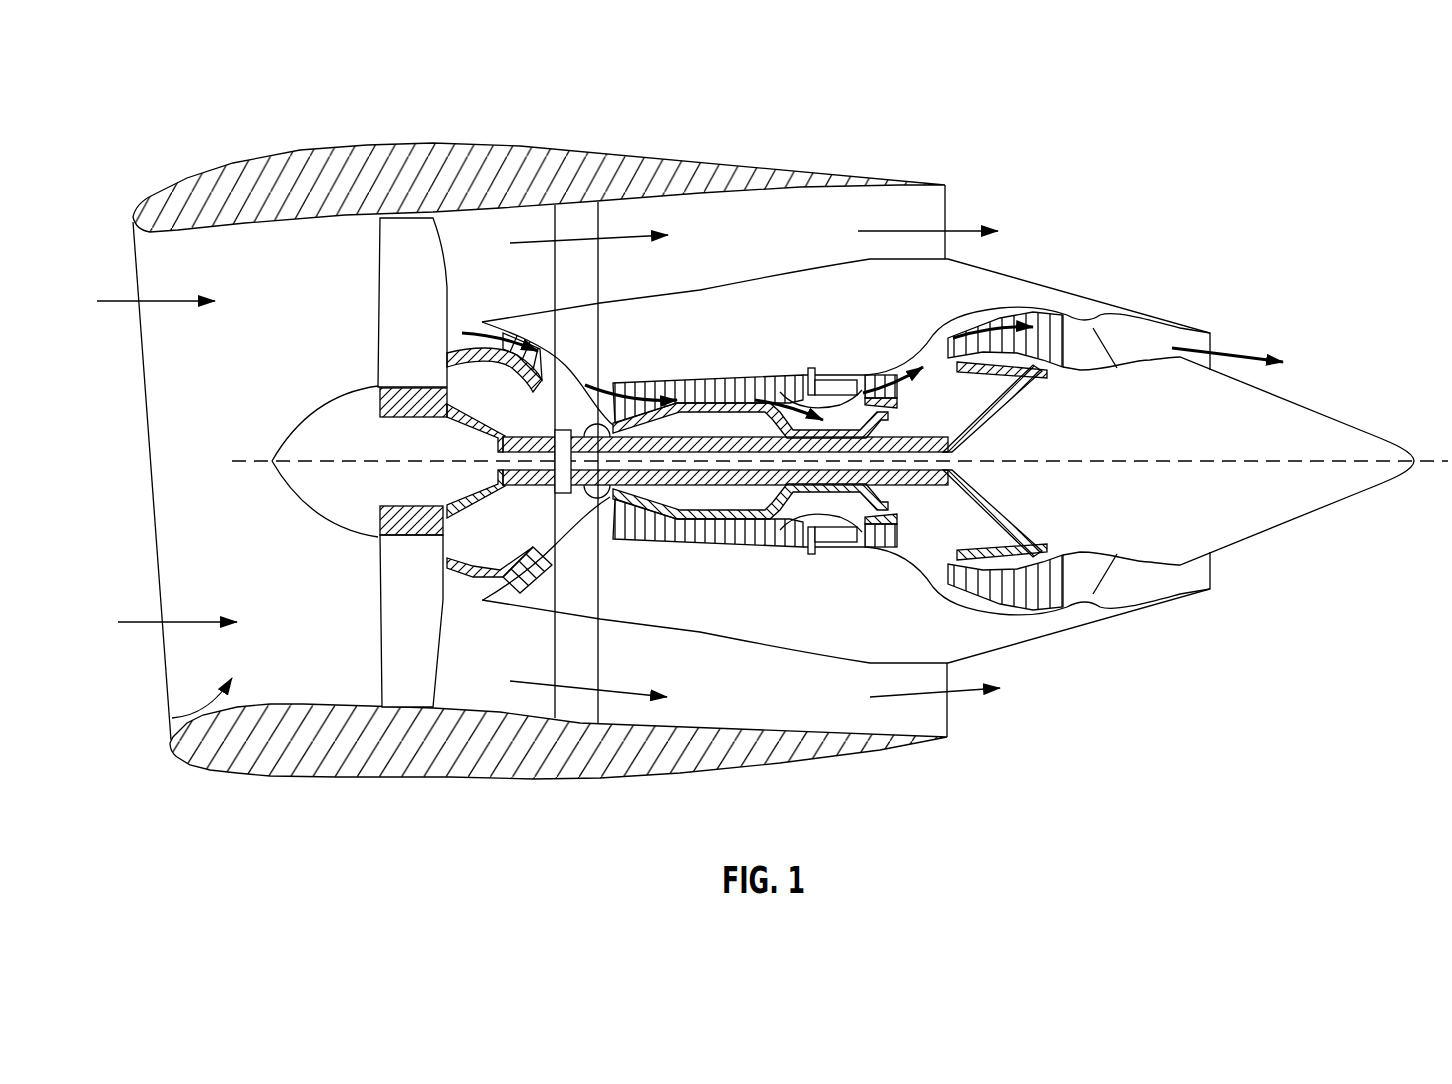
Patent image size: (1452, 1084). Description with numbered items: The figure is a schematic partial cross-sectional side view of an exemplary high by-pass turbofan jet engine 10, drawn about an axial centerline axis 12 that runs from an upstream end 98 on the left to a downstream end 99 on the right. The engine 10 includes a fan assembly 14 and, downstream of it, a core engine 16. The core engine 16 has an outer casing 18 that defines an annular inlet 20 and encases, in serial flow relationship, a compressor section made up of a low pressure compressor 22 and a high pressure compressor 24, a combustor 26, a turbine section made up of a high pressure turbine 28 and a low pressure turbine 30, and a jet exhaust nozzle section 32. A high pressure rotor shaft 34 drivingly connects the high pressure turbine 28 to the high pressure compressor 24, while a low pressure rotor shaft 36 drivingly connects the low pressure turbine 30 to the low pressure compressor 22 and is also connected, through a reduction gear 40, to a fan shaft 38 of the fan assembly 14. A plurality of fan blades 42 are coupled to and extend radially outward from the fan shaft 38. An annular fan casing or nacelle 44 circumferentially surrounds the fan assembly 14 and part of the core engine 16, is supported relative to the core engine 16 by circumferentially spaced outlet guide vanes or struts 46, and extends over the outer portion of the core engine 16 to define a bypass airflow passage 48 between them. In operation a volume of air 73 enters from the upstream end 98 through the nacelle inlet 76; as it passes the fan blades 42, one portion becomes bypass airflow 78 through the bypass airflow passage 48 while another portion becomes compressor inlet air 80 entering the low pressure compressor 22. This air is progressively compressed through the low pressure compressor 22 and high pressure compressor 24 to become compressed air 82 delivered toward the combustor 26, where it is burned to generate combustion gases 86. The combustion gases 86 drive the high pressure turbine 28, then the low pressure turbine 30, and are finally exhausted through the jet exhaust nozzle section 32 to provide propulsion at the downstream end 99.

The high by-pass turbofan jet engine 10 is at (772, 440).
The axial centerline axis 12 is at (1168, 455).
The fan assembly 14 is at (472, 250).
The core engine 16 is at (808, 265).
The outer casing 18 is at (777, 652).
The annular inlet 20 is at (490, 588).
The low pressure (LP) compressor 22 is at (535, 532).
The high pressure (HP) compressor 24 is at (633, 533).
The combustor 26 is at (833, 537).
The high pressure (HP) turbine 28 is at (980, 515).
The low pressure (LP) turbine 30 is at (1035, 620).
The jet exhaust nozzle section 32 is at (1118, 588).
The high pressure (HP) rotor shaft 34 is at (877, 425).
The low pressure (LP) rotor shaft 36 is at (987, 417).
The fan shaft 38 is at (447, 420).
The reduction gear 40 is at (562, 427).
The fan blades 42 is at (386, 303).
The nacelle 44 is at (382, 148).
The outlet guide vanes or struts 46 is at (585, 215).
The bypass airflow passage 48 is at (749, 248).
The air 73 is at (180, 300).
The nacelle inlet 76 is at (172, 718).
The bypass airflow 78 is at (613, 242).
The compressor inlet air 80 is at (481, 333).
The compressed air 82 is at (615, 380).
The combustion gases 86 is at (995, 327).
The upstream end 98 is at (134, 477).
The downstream end 99 is at (1437, 521).